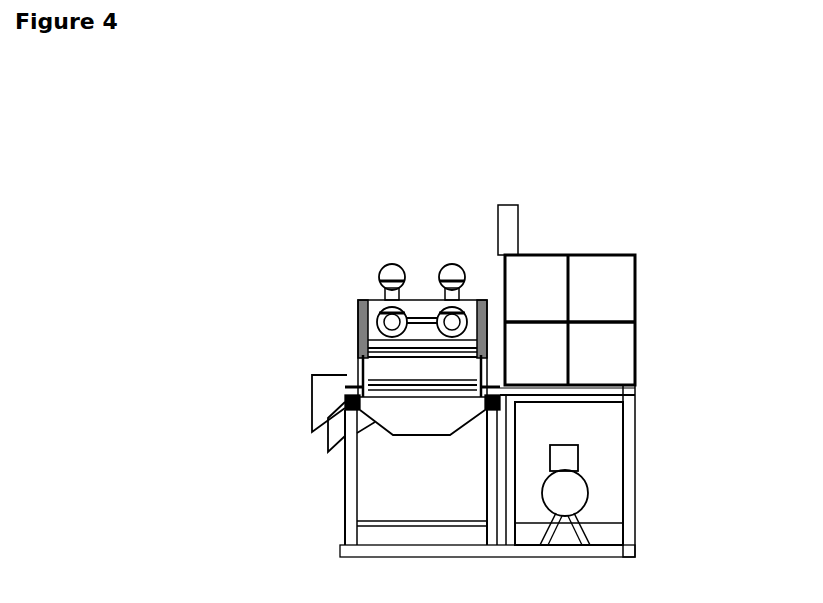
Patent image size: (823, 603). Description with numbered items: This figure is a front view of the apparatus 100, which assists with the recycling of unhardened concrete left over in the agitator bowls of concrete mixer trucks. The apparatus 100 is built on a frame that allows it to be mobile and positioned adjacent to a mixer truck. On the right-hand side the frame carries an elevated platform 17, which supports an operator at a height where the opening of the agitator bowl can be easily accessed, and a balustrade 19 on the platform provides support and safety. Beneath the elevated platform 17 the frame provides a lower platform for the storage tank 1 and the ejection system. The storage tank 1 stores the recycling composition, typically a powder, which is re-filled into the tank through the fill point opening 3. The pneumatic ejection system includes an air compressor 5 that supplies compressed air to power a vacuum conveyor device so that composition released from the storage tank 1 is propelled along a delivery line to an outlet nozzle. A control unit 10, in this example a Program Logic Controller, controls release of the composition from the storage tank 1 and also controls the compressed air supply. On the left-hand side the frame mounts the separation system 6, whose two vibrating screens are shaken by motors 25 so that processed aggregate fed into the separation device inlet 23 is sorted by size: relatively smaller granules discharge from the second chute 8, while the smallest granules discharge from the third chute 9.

The apparatus 100 is at (426, 217).
The storage tank 1 is at (595, 430).
The fill point opening 3 is at (637, 395).
The air compressor 5 is at (585, 500).
The separation system 6 is at (358, 370).
The second chute 8 is at (312, 372).
The third chute 9 is at (345, 432).
The control unit 10 is at (520, 212).
The elevated platform 17 is at (650, 330).
The balustrade 19 is at (605, 256).
The separation device inlet 23 is at (357, 340).
The motors 25 is at (385, 278).